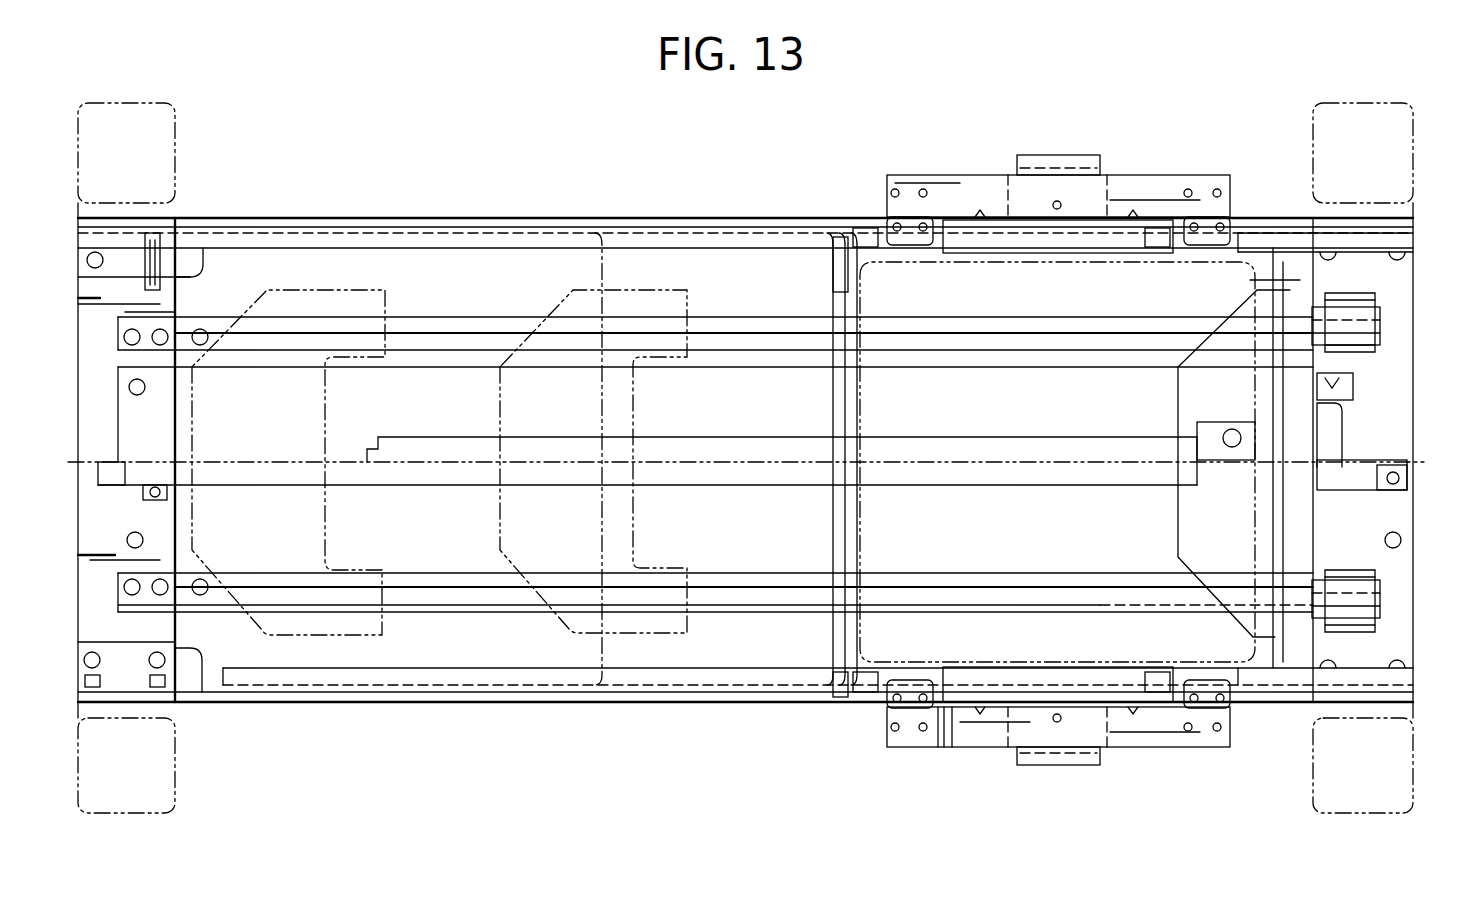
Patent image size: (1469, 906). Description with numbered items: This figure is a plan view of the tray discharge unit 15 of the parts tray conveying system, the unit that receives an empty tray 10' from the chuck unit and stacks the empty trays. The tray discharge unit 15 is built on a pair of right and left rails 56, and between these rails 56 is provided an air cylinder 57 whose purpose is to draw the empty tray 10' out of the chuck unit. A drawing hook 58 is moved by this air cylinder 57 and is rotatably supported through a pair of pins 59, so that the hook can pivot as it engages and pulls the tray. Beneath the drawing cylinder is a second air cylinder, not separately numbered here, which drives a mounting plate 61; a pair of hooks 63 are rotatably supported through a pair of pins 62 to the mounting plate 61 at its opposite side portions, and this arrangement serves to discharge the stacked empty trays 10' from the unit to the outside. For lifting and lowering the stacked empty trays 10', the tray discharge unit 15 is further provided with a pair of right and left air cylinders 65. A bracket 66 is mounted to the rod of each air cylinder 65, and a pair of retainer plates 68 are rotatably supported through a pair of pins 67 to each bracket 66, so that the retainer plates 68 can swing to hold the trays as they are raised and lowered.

The tray discharge unit 15 is at (1070, 136).
The rails 56 is at (712, 242).
The air cylinder 57 is at (413, 455).
The drawing hook 58 is at (1342, 430).
The pins 59 is at (1353, 392).
The mounting plate 61 is at (262, 630).
The pins 62 is at (1378, 295).
The hooks 63 is at (1380, 333).
The air cylinders 65 is at (1083, 162).
The bracket 66 is at (975, 197).
The pins 67 is at (950, 740).
The retainer plates 68 is at (912, 240).
The empty tray 10' is at (939, 465).